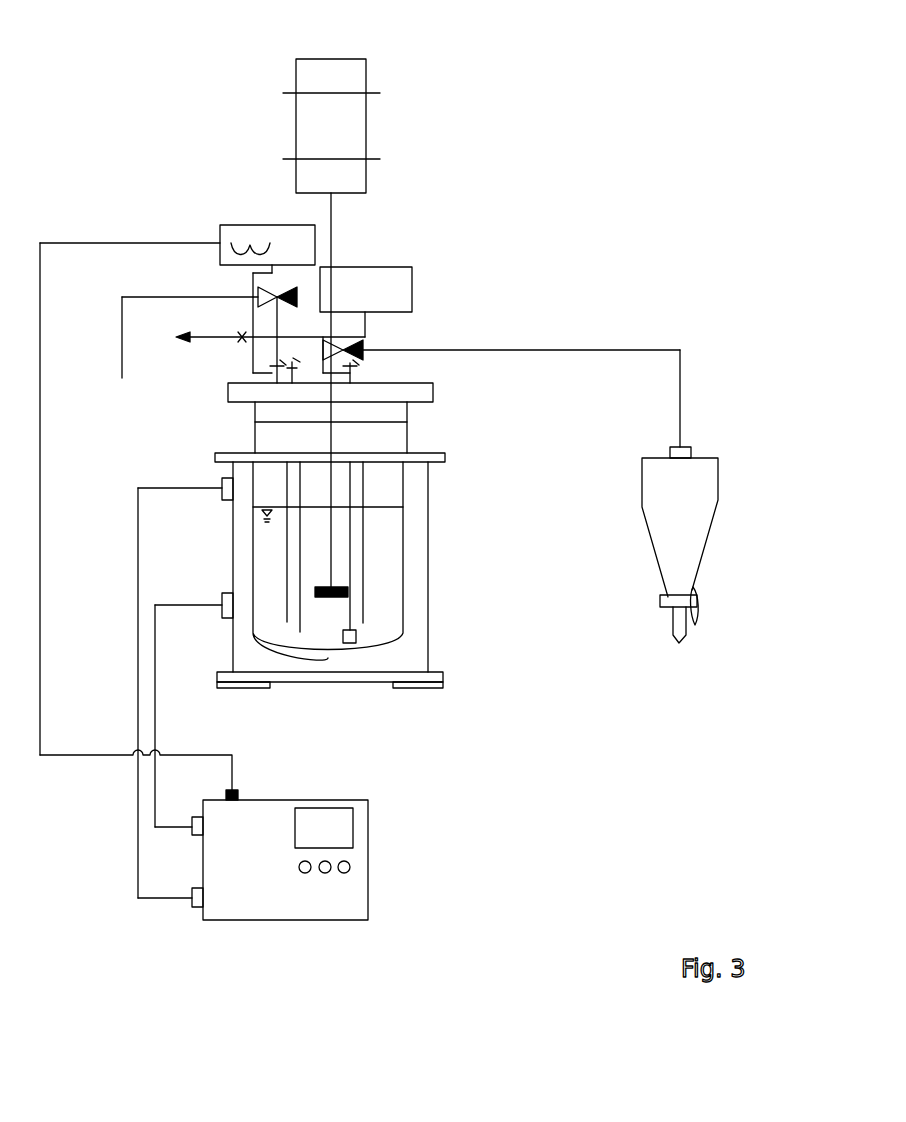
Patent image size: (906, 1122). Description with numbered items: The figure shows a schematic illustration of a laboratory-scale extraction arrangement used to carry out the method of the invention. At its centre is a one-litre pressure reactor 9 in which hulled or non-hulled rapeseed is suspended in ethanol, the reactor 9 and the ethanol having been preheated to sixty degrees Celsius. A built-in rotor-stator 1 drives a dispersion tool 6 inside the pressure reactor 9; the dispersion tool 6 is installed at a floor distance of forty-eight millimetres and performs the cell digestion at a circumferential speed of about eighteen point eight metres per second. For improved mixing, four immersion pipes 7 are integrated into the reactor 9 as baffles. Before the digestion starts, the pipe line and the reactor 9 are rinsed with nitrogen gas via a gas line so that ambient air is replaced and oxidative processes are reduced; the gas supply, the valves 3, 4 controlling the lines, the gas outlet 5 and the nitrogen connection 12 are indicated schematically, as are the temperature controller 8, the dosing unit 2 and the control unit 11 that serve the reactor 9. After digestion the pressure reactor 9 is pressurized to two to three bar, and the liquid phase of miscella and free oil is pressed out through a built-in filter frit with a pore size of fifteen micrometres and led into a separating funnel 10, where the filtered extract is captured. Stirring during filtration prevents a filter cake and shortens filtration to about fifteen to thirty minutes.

The rotor-stator 1 is at (348, 134).
The dosing device 2 is at (397, 280).
The gas inlet valve 3 is at (292, 291).
The outlet valve 4 is at (360, 350).
The gas outlet 5 is at (237, 338).
The dispersion tool 6 is at (328, 583).
The immersion pipes 7 is at (360, 627).
The temperature controller 8 is at (226, 233).
The pressure reactor 9 is at (428, 503).
The separating funnel 10 is at (683, 523).
The control unit 11 is at (360, 872).
The nitrogen supply 12 is at (122, 355).